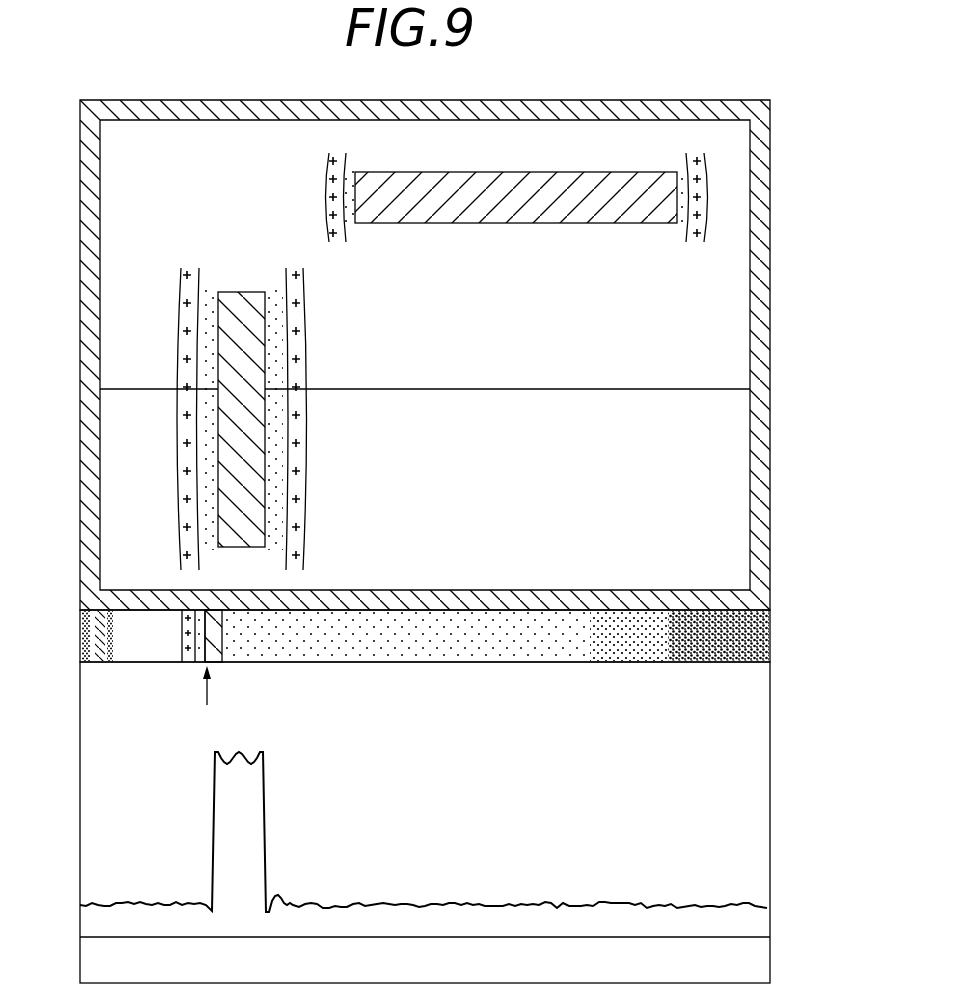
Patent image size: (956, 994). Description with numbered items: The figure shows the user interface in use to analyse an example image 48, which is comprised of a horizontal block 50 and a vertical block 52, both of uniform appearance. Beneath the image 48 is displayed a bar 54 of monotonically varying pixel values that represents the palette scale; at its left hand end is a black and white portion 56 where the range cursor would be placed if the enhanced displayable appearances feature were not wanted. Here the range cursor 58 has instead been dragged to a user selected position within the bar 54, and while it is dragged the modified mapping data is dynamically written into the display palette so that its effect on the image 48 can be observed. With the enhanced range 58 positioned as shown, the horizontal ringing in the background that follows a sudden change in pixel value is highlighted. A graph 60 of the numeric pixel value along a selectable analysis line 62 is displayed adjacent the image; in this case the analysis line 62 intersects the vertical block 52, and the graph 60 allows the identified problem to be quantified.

The example image 48 is at (738, 263).
The horizontal block 50 is at (585, 178).
The vertical block 52 is at (222, 318).
The bar of monotonically varying pixel values 54 is at (728, 665).
The black and white portion 56 is at (100, 662).
The range cursor 58 is at (203, 664).
The graph 60 is at (326, 812).
The analysis line 62 is at (728, 389).